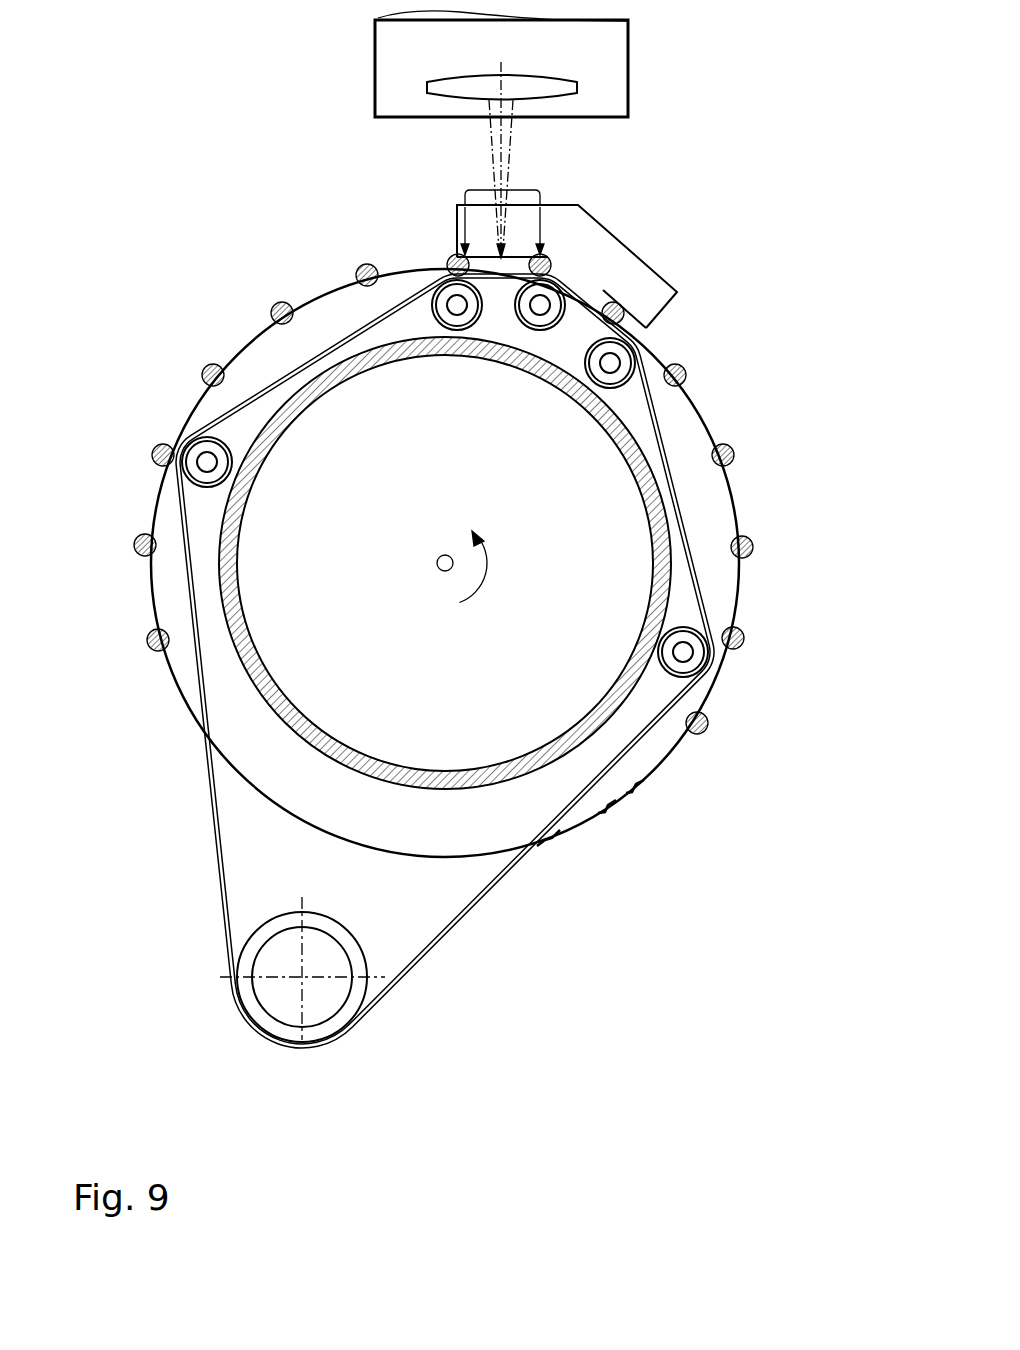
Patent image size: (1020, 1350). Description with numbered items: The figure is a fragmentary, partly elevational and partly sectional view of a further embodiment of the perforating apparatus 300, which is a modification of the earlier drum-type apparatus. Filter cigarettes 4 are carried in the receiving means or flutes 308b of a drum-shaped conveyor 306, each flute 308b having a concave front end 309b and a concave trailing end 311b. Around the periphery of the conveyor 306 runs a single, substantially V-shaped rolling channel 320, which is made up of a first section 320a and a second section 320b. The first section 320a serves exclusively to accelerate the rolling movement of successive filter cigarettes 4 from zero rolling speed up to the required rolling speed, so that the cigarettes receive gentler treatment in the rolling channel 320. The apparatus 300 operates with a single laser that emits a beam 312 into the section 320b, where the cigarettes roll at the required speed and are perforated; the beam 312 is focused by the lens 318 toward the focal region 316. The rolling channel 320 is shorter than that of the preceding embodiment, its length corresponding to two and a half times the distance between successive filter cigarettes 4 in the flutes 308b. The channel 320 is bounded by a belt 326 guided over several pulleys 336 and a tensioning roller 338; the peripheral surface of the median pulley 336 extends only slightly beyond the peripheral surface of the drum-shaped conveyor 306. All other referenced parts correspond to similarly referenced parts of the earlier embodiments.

The perforating apparatus 300 is at (172, 196).
The lens 318 is at (423, 86).
The beam 312 is at (497, 137).
The beam axis / focus 316 is at (493, 180).
The rolling channel 320 is at (580, 283).
The first section of the rolling channel 320a is at (633, 342).
The section of the rolling channel 320b is at (493, 260).
The filter cigarette 4 is at (753, 547).
The drum-shaped conveyor 306 is at (698, 695).
The median pulley 336 is at (208, 460).
The belt 326 is at (410, 975).
The tensioning roller 338 is at (337, 1020).
The flutes 308b is at (552, 833).
The concave trailing end 311b is at (605, 808).
The concave front end 309b is at (632, 788).